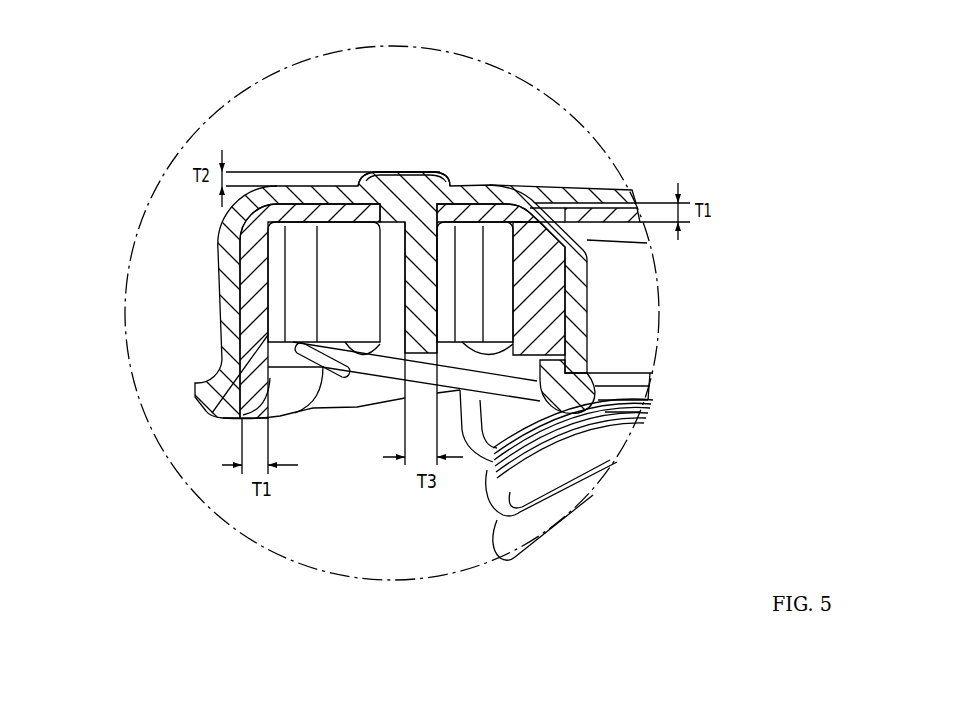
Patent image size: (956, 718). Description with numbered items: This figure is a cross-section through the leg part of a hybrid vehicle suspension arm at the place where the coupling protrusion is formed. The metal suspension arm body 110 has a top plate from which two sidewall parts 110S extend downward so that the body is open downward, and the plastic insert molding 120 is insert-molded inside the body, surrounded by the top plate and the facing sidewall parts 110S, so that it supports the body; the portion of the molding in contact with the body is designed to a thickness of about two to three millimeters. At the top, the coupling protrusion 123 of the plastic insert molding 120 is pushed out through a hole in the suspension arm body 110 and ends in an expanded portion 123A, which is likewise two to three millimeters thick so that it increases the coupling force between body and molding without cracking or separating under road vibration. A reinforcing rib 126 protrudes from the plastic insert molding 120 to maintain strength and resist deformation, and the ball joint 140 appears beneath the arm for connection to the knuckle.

The suspension arm body 110 is at (207, 248).
The sidewall parts 110S is at (227, 302).
The plastic insert molding 120 is at (426, 321).
The coupling protrusion 123 is at (405, 168).
The expanded portion 123A is at (435, 182).
The reinforcing rib 126 is at (412, 260).
The ball joint 140 is at (490, 517).